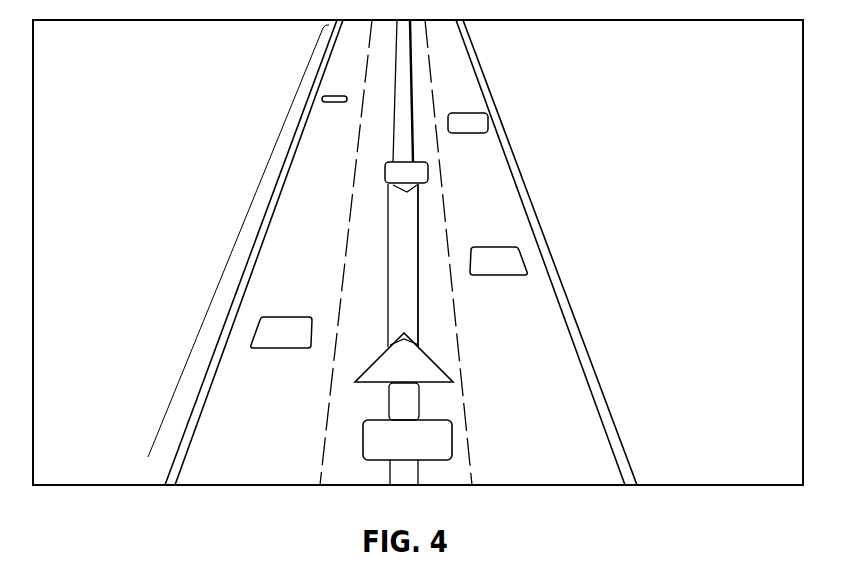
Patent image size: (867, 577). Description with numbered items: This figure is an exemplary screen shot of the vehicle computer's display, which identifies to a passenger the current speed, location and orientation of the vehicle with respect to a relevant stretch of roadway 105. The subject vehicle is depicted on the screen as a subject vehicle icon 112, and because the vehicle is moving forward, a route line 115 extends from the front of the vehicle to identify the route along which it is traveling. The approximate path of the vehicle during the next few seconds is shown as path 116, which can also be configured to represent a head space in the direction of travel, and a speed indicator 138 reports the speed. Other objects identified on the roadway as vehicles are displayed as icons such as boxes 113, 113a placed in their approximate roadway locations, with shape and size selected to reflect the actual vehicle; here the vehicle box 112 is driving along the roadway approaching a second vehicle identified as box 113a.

The roadway 105 is at (232, 240).
The subject vehicle icon 112 is at (408, 353).
The boxes 113 is at (427, 432).
The box 113a is at (407, 170).
The route line 115 is at (400, 65).
The path 116 is at (395, 220).
The speed indicator 138 is at (775, 98).